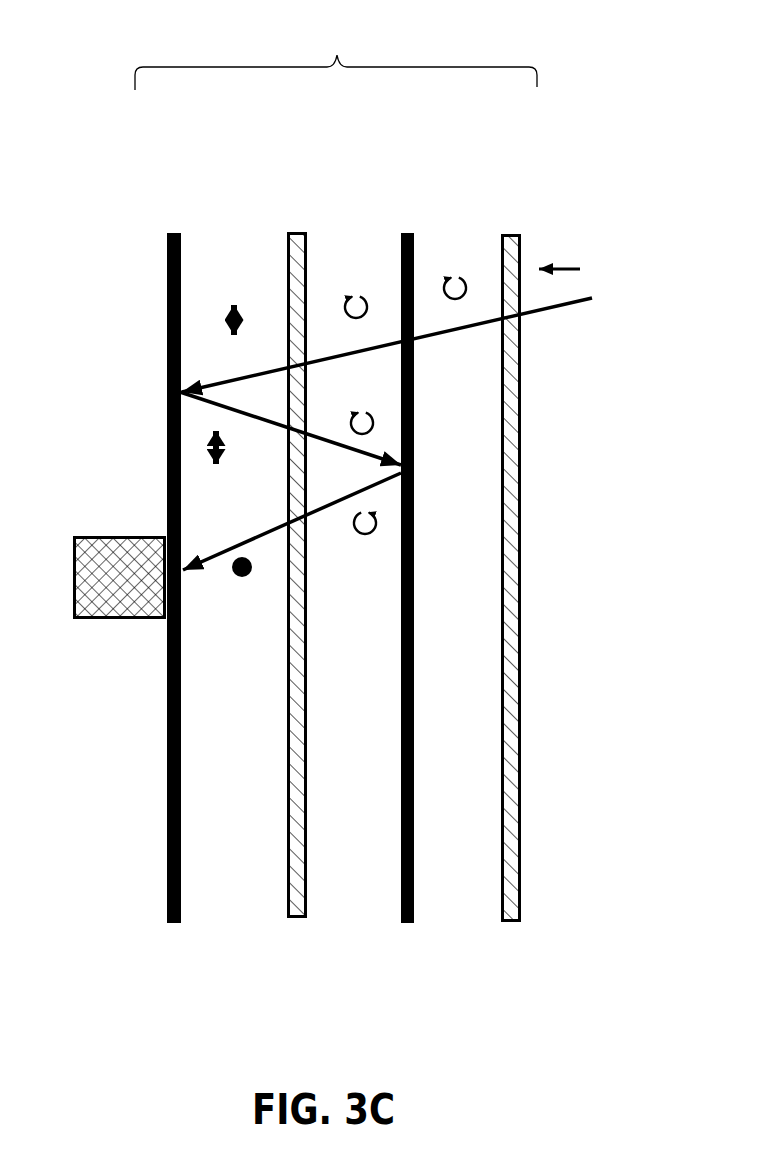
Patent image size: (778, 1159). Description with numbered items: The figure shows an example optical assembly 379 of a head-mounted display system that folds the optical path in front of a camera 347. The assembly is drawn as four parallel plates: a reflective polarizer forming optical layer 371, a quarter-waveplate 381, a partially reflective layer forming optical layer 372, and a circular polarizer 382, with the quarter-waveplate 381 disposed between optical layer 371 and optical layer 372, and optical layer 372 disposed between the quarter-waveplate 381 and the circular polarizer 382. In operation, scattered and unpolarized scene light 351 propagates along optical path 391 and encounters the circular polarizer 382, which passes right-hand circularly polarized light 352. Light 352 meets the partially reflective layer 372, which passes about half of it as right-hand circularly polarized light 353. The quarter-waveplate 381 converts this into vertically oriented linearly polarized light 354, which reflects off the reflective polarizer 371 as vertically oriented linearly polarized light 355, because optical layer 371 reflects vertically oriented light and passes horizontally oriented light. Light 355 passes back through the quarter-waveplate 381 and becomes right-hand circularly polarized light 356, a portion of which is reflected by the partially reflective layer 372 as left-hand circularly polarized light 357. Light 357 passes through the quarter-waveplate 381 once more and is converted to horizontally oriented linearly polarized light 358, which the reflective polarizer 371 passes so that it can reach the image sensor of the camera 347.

The optical assembly 379 is at (336, 55).
The optical layer 371 is at (176, 232).
The quarter-waveplate 381 is at (297, 231).
The optical layer 372 is at (407, 232).
The circular polarizer 382 is at (510, 233).
The optical path 391 is at (591, 296).
The scene light 351 is at (559, 253).
The circularly polarized light 352 is at (458, 271).
The right-hand circularly polarized light 353 is at (359, 291).
The linearly polarized light 354 is at (233, 302).
The vertically oriented linearly polarized light 355 is at (216, 471).
The right-hand circularly polarized light 356 is at (364, 407).
The left-hand circularly polarized light 357 is at (366, 542).
The horizontally oriented linearly polarized light 358 is at (246, 586).
The camera 347 is at (133, 591).